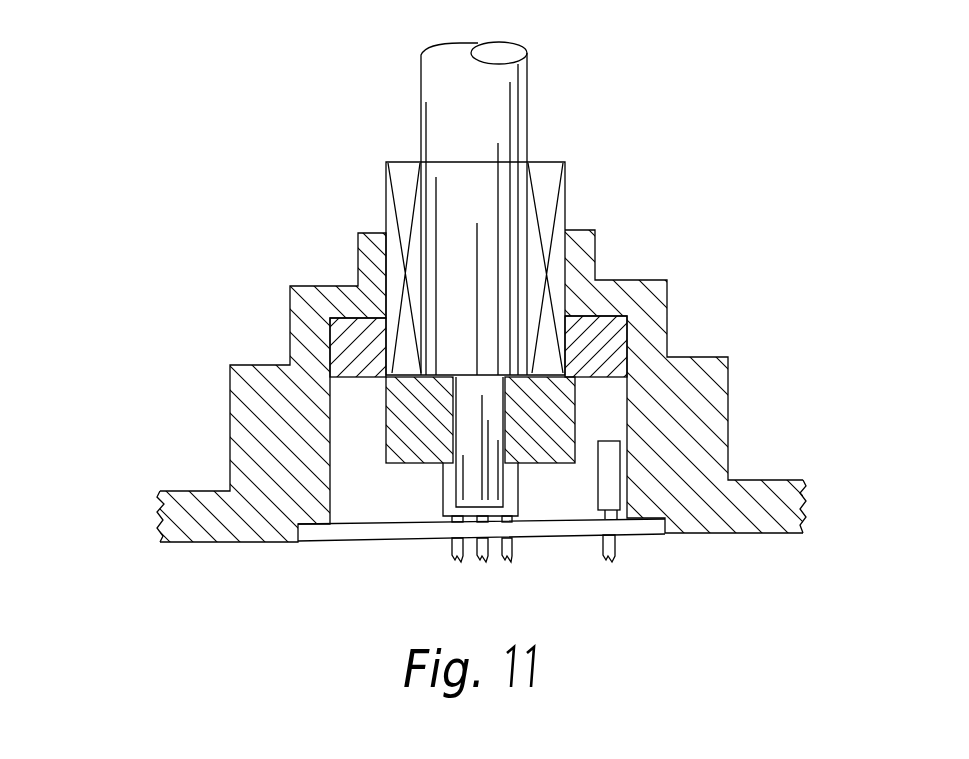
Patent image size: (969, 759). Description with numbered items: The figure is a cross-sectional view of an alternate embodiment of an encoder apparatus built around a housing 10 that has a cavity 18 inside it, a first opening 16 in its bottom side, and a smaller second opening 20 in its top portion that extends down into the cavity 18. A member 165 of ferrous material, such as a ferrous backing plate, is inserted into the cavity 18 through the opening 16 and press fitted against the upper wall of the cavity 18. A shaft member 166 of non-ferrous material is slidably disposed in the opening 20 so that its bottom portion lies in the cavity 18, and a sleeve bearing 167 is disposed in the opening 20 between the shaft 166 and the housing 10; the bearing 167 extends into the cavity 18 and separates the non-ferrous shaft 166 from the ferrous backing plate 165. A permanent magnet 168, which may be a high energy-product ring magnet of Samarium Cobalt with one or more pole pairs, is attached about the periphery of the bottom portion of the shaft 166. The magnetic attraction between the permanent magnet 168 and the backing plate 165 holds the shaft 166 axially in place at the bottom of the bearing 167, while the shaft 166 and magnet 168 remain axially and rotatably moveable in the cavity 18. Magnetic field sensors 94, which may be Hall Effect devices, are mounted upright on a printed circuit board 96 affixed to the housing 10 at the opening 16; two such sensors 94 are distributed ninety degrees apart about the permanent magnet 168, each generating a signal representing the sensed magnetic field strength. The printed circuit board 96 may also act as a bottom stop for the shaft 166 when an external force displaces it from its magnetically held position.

The housing 10 is at (460, 376).
The first opening 16 is at (488, 560).
The cavity 18 is at (381, 498).
The second opening 20 is at (378, 264).
The magnetic field sensors 94 is at (613, 473).
The printed circuit board 96 is at (646, 534).
The member of ferrous material 165 is at (362, 340).
The shaft member 166 is at (480, 87).
The sleeve bearing 167 is at (562, 182).
The permanent magnet 168 is at (410, 410).